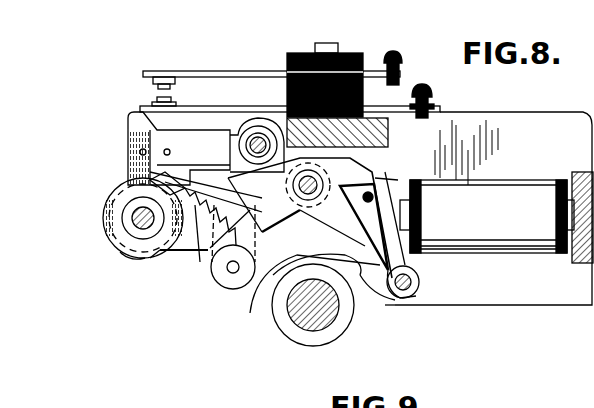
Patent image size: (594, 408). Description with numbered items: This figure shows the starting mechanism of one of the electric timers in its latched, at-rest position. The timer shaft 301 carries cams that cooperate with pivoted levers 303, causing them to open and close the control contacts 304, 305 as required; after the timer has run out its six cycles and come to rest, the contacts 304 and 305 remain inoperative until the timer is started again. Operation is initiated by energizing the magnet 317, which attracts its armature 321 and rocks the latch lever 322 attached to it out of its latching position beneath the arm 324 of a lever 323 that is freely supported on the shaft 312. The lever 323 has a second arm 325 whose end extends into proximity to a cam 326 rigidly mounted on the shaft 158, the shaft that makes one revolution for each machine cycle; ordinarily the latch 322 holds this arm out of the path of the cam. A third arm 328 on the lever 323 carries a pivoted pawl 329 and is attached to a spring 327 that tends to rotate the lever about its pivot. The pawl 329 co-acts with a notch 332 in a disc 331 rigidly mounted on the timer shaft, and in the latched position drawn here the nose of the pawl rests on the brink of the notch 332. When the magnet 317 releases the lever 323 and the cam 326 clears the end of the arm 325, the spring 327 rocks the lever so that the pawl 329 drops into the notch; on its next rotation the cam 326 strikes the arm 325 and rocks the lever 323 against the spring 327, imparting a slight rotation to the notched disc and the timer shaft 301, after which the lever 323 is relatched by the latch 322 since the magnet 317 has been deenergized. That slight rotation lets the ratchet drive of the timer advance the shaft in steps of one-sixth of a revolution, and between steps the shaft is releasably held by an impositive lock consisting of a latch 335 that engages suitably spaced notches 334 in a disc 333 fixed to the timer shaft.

The shaft 158 is at (340, 318).
The timer shaft 301 is at (160, 255).
The pivoted levers 303 is at (128, 128).
The control contacts 304 is at (162, 72).
The control contacts 305 is at (190, 111).
The shaft 312 is at (318, 183).
The magnet 317 is at (497, 193).
The armature 321 is at (378, 193).
The latch lever 322 is at (405, 258).
The lever 323 is at (313, 242).
The arm 324 is at (396, 180).
The second arm 325 is at (264, 298).
The cam 326 is at (362, 295).
The spring 327 is at (185, 270).
The third arm 328 is at (262, 196).
The pivoted pawl 329 is at (196, 245).
The disc 331 is at (143, 187).
The notch 332 is at (108, 203).
The disc 333 is at (105, 217).
The notches 334 is at (143, 260).
The latch 335 is at (230, 172).